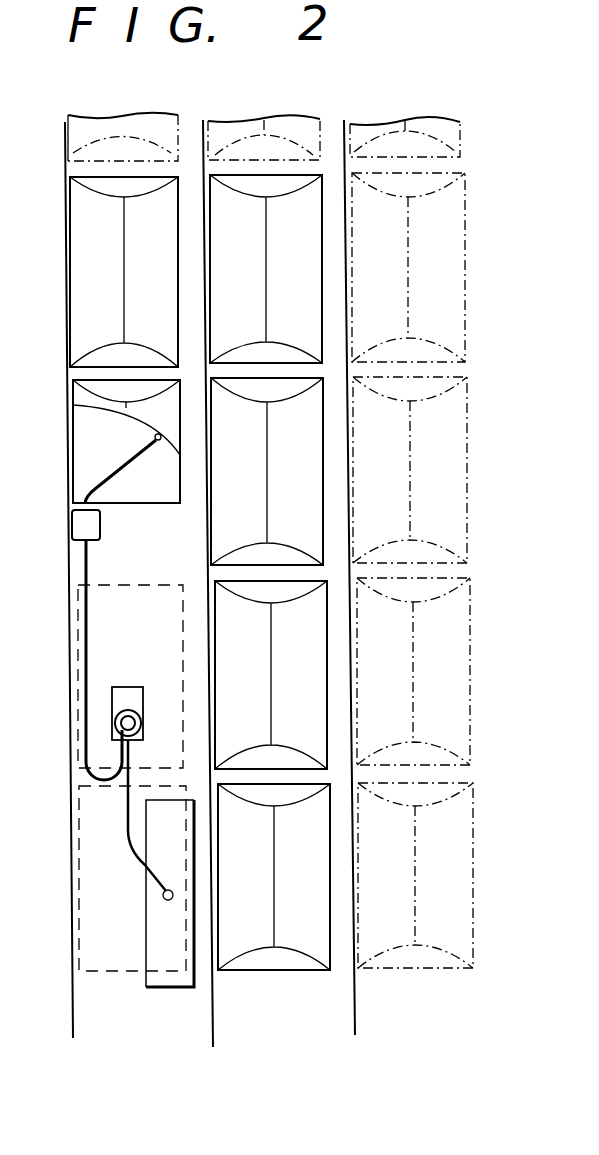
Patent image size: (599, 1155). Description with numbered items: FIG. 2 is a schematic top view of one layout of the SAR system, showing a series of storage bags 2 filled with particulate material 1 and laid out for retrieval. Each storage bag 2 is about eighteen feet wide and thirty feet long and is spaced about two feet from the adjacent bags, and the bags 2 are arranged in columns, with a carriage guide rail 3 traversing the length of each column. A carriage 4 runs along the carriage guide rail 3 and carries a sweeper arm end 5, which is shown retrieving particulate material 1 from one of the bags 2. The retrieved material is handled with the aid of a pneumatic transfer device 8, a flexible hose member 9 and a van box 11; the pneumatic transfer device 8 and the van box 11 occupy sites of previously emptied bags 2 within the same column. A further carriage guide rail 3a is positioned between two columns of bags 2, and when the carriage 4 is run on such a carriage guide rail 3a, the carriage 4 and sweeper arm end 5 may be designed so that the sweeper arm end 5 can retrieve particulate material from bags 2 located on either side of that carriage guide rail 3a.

The particulate material 1 is at (112, 410).
The storage bag 2 is at (73, 132).
The carriage guide rail 3 is at (72, 997).
The carriage guide rail 3a is at (212, 1004).
The carriage 4 is at (90, 522).
The sweeper arm end 5 is at (150, 437).
The pneumatic transfer device 8 is at (137, 693).
The flexible hose member 9 is at (88, 628).
The van box 11 is at (152, 978).